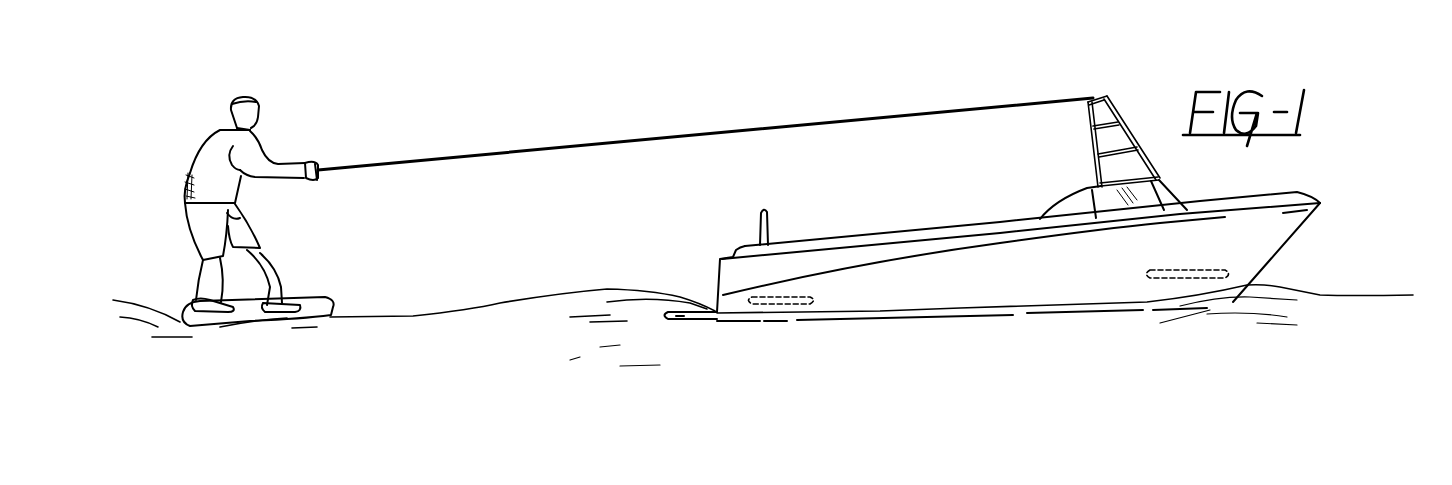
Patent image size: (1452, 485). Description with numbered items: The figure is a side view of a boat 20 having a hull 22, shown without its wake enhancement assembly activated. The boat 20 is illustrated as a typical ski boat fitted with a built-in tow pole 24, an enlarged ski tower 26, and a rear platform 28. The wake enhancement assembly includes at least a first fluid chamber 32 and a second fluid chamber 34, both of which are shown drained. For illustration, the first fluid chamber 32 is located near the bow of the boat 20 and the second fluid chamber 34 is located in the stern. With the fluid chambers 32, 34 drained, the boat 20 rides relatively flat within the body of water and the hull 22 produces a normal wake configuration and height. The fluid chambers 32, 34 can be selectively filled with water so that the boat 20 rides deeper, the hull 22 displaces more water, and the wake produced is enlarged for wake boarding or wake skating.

The boat 20 is at (1325, 192).
The hull 22 is at (916, 268).
The tow pole 24 is at (770, 223).
The ski tower 26 is at (1126, 122).
The rear platform 28 is at (695, 322).
The first fluid chamber 32 is at (1157, 283).
The second fluid chamber 34 is at (807, 299).